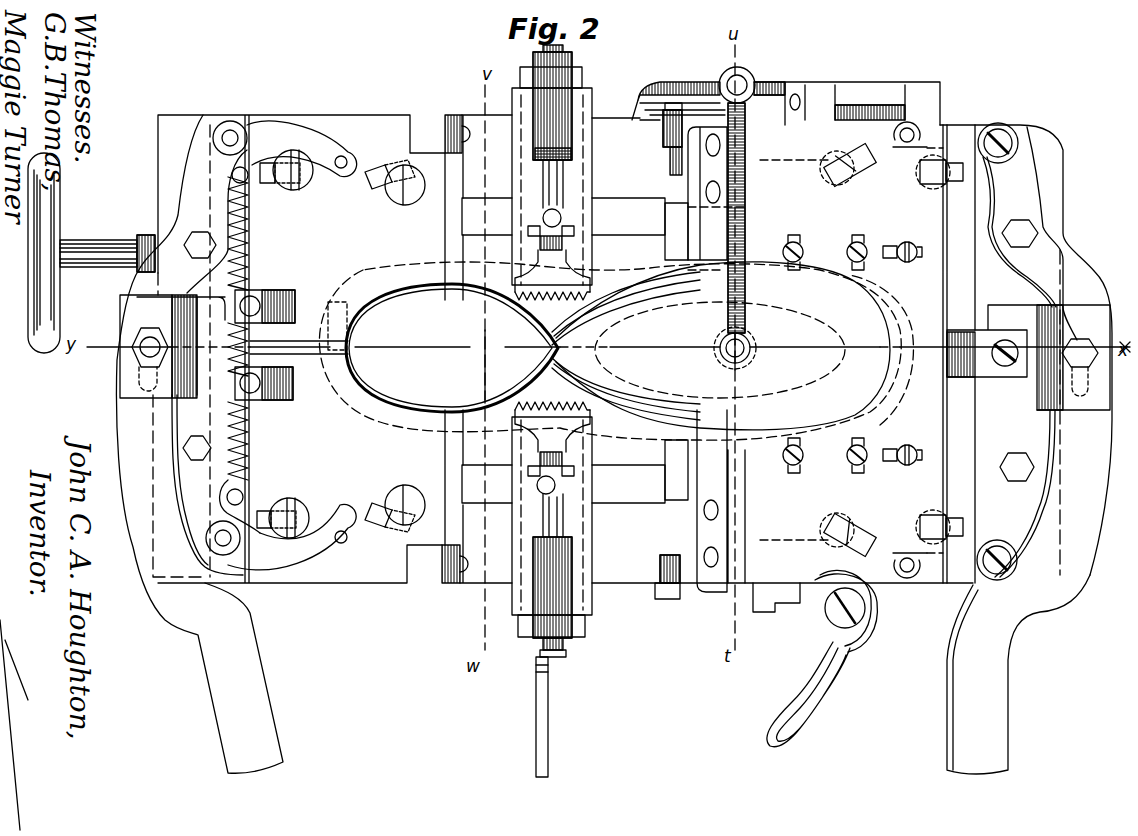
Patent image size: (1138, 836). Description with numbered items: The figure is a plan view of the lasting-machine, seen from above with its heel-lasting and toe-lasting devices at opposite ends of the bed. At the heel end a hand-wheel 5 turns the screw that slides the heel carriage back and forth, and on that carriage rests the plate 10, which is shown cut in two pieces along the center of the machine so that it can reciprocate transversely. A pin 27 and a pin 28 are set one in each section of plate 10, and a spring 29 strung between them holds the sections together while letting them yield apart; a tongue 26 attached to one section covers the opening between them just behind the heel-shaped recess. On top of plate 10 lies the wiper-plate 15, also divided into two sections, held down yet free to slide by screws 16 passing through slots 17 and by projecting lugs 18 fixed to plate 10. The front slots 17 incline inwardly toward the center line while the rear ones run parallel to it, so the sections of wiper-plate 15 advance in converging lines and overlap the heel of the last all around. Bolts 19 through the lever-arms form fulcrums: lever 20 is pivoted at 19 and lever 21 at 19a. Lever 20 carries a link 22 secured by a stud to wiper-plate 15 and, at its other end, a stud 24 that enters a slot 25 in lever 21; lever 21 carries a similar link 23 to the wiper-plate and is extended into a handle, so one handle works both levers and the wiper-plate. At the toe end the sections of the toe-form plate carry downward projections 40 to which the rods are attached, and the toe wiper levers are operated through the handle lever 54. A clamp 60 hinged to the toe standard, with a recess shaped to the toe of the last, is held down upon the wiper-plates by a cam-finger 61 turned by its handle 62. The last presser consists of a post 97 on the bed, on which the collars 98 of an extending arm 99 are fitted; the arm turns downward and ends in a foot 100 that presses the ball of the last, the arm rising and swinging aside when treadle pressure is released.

The hand-wheel 5 is at (58, 218).
The plate 10 is at (235, 277).
The wiper-plate 15 is at (608, 347).
The screws 16 is at (405, 490).
The slots 17 is at (370, 546).
The projecting lugs 18 is at (276, 344).
The bolts 19 is at (183, 450).
The fulcrum 19a is at (247, 243).
The lever 20 is at (200, 327).
The lever 21 is at (199, 444).
The link 22 is at (292, 537).
The link 23 is at (302, 148).
The stud 24 is at (147, 350).
The slot 25 is at (138, 381).
The tongue 26 is at (343, 300).
The pin 27 is at (243, 495).
The pin 28 is at (232, 173).
The spring 29 is at (246, 262).
The downward projections 40 is at (663, 115).
The lever 54 is at (998, 688).
The clamp 60 is at (861, 350).
The cam-finger 61 is at (852, 597).
The handle 62 is at (805, 708).
The standard or post 97 is at (707, 82).
The collars 98 is at (752, 78).
The extending arm 99 is at (747, 184).
The foot 100 is at (752, 340).